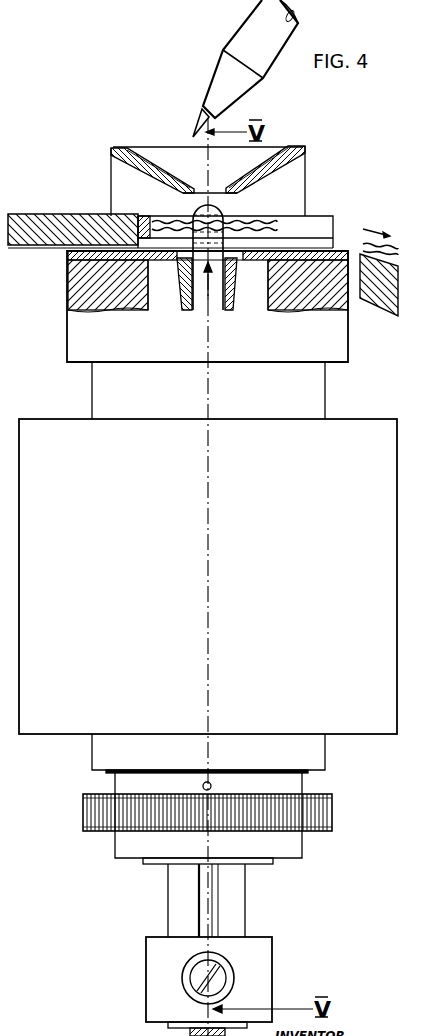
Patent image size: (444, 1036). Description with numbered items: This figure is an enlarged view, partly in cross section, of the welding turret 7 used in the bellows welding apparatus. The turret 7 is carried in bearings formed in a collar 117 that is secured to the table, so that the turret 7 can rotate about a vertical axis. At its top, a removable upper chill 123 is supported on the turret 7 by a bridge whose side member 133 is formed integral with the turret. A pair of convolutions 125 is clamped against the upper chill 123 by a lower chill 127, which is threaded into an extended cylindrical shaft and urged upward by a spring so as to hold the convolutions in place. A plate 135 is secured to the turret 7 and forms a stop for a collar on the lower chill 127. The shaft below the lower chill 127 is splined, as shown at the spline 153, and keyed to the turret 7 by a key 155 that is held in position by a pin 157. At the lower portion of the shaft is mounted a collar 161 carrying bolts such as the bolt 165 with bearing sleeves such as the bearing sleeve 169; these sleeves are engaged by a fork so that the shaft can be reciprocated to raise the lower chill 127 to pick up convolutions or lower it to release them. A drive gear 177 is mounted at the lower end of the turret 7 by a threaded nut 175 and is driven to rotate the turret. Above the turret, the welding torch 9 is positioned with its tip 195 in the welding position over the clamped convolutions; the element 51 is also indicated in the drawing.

The welding torch 9 is at (233, 48).
The tip 195 is at (193, 128).
The welding turret 7 is at (100, 161).
The side member 133 is at (306, 184).
The upper chill 123 is at (247, 173).
The convolutions 125 is at (168, 213).
The plate 135 is at (342, 248).
The lower chill 127 is at (237, 278).
The collar 117 is at (214, 487).
The threaded nut 175 is at (303, 842).
The drive gear 177 is at (333, 808).
The pin 157 is at (203, 786).
The shaft housing 51 is at (246, 908).
The key 155 is at (199, 872).
The spline 153 is at (212, 888).
The collar 161 is at (272, 971).
The bolt 165 is at (222, 968).
The bearing sleeve 169 is at (229, 988).